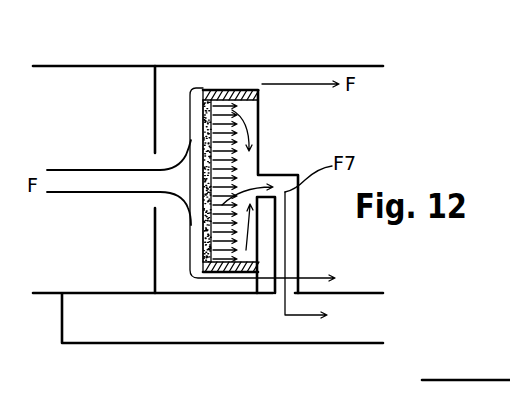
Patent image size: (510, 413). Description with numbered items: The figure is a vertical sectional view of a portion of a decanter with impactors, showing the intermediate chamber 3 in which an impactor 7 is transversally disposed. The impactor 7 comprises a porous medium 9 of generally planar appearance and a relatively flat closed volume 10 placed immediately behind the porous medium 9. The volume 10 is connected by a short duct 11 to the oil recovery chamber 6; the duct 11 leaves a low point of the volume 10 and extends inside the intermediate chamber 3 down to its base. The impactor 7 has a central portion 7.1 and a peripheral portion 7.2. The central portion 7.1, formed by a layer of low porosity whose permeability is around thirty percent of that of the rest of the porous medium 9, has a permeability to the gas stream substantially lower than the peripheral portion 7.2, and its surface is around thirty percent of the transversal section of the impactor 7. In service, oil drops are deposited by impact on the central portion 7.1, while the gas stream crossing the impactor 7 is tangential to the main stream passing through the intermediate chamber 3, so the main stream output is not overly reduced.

The intermediate chamber 3 is at (302, 104).
The oil recovery chamber 6 is at (115, 320).
The impactor 7 is at (259, 124).
The central portion 7.1 is at (200, 178).
The peripheral portion 7.2 is at (203, 90).
The porous medium 9 is at (203, 120).
The closed volume 10 is at (248, 252).
The duct 11 is at (300, 228).